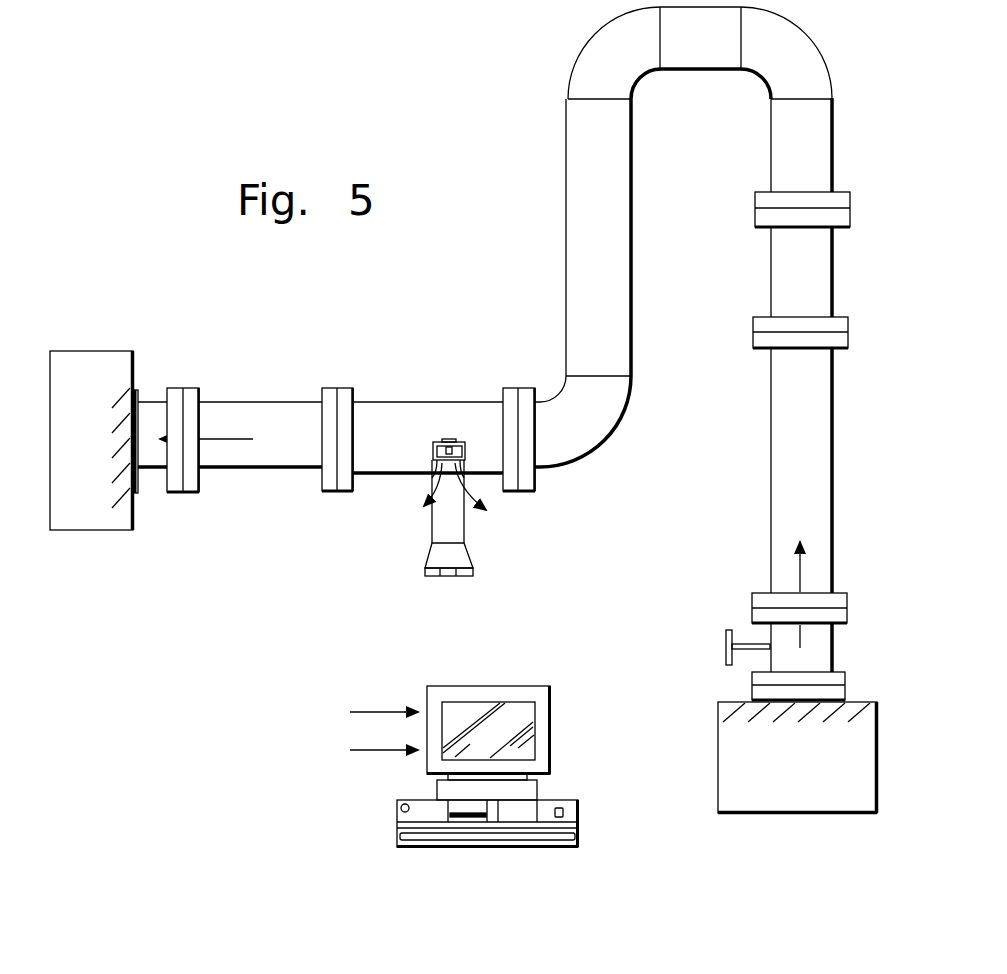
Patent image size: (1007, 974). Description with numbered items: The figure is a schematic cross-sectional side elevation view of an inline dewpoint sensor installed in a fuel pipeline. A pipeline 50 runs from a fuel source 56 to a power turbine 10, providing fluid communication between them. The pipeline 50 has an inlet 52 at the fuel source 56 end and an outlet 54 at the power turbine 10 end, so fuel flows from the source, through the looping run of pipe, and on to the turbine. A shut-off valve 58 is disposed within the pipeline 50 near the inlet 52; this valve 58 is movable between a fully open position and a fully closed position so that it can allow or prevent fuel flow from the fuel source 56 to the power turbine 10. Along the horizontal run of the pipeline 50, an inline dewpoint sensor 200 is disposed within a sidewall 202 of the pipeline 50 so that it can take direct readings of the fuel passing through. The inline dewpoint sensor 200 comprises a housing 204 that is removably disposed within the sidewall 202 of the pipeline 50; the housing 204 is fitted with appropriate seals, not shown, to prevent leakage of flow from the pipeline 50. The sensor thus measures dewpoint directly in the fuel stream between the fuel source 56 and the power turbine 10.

The power turbine 10 is at (101, 457).
The pipeline 50 is at (368, 402).
The inlet 52 is at (833, 648).
The outlet 54 is at (152, 402).
The fuel source 56 is at (818, 772).
The shut-off valve 58 is at (726, 651).
The inline dewpoint sensor 200 is at (434, 539).
The sidewall 202 is at (386, 477).
The housing 204 is at (468, 533).